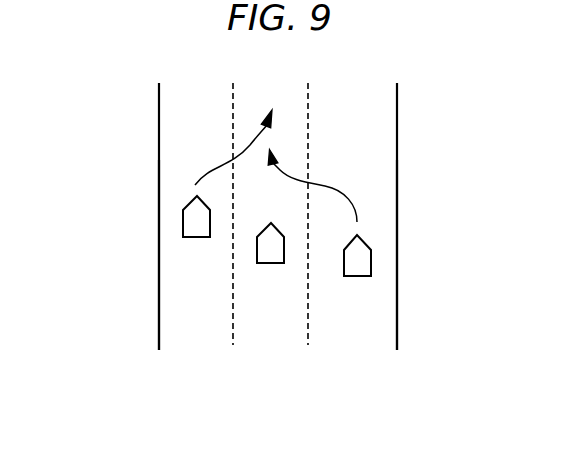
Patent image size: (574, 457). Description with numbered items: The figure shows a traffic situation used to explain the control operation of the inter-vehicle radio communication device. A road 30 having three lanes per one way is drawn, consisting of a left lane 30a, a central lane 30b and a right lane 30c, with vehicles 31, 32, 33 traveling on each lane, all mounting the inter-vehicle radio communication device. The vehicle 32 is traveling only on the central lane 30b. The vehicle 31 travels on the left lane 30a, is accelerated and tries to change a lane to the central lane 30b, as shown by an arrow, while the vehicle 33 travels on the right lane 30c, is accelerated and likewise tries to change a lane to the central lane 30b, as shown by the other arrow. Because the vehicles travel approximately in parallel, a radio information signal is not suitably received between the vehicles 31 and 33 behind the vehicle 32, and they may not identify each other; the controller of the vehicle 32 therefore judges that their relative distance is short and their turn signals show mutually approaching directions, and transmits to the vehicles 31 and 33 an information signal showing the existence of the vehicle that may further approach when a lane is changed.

The road 30 is at (158, 177).
The left lane 30a is at (180, 335).
The central lane 30b is at (270, 335).
The right lane 30c is at (373, 337).
The vehicle 31 is at (197, 238).
The vehicle 32 is at (271, 264).
The vehicle 33 is at (357, 277).